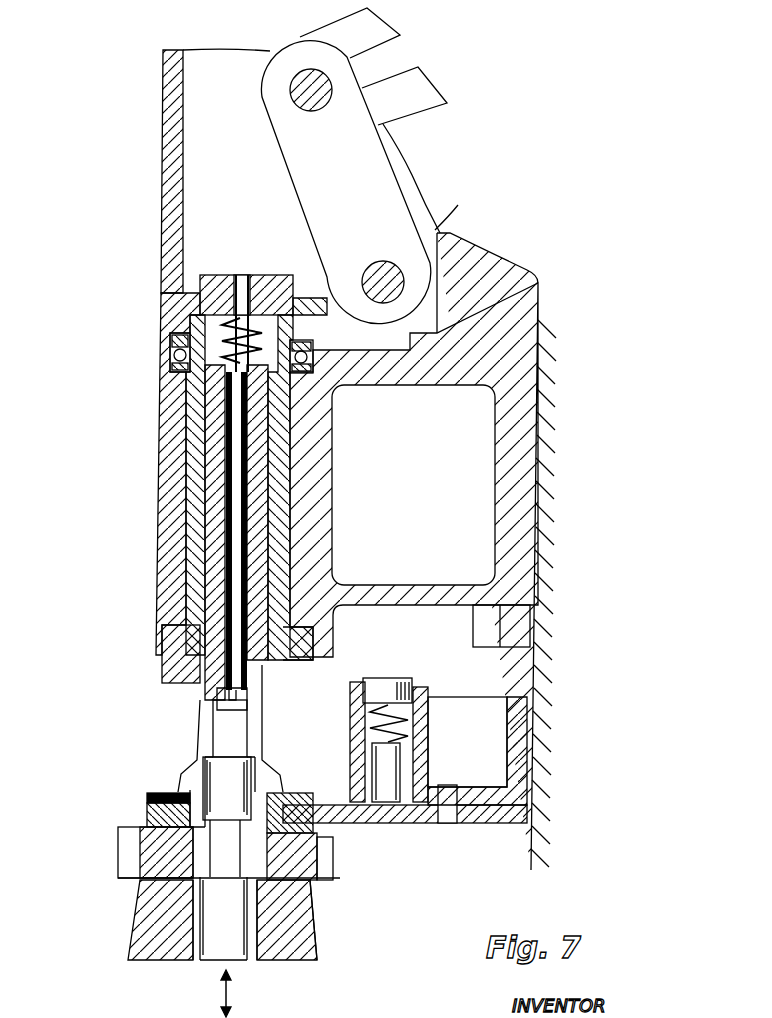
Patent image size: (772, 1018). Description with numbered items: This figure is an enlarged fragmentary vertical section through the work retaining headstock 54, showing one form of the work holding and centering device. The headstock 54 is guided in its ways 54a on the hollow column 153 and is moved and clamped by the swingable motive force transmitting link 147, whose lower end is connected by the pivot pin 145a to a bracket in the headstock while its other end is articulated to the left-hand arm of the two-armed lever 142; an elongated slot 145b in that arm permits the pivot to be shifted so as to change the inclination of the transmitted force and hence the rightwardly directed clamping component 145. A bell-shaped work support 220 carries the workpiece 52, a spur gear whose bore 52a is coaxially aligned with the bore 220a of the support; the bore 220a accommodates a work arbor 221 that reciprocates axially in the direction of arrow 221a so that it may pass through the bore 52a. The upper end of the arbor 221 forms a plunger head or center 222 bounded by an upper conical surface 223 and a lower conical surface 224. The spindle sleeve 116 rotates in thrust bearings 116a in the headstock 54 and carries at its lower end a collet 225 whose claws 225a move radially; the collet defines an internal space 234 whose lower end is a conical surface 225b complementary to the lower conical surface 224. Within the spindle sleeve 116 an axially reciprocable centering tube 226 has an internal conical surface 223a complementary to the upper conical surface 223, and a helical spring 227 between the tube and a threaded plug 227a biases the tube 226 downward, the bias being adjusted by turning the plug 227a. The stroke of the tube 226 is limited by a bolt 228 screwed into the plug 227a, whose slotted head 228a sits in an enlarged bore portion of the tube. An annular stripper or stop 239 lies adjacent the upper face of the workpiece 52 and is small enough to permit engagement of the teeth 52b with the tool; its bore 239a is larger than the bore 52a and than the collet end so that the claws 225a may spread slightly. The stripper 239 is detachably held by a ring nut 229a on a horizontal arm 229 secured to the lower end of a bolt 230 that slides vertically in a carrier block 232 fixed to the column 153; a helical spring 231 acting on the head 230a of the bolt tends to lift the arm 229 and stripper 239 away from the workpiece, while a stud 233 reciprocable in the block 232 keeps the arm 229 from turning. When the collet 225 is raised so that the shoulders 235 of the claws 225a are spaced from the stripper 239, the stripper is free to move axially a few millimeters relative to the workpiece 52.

The work retaining headstock 54 is at (518, 276).
The ways 54a is at (458, 628).
The hollow support or column 153 is at (538, 688).
The motive force transmitting link 147 is at (303, 182).
The clamping component 145 is at (294, 110).
The pivot pin 145a is at (394, 263).
The elongated slot 145b is at (390, 40).
The two-armed lever 142 is at (433, 98).
The spindle sleeve 116 is at (197, 398).
The thrust bearings 116a is at (168, 350).
The helical spring 227 is at (203, 318).
The threaded plug 227a is at (230, 275).
The centering tube 226 is at (204, 694).
The elongated bar or bolt 228 is at (230, 471).
The slotted head 228a is at (272, 716).
The collet 225 is at (163, 664).
The upper conical surface 223 is at (215, 755).
The internal conical surface 223a is at (264, 758).
The internal space 234 is at (268, 763).
The plunger head or center 222 is at (210, 775).
The lower conical surface 224 is at (280, 784).
The shoulders 235 is at (183, 776).
The annular stripper or stop 239 is at (147, 813).
The ring nut 229a is at (147, 801).
The fingers or claws 225a is at (150, 848).
The conical surface 225b is at (292, 856).
The bore 239a is at (323, 838).
The workpiece 52 is at (118, 877).
The bore or aperture 52a is at (312, 887).
The teeth 52b is at (322, 873).
The work support 220 is at (290, 923).
The bore 220a is at (312, 948).
The work arbor 221 is at (200, 928).
The arrow 221a is at (230, 996).
The horizontal arm 229 is at (348, 822).
The stud 233 is at (445, 824).
The bolt 230 is at (410, 780).
The head 230a is at (396, 681).
The helical spring 231 is at (385, 728).
The carrier or block 232 is at (512, 797).